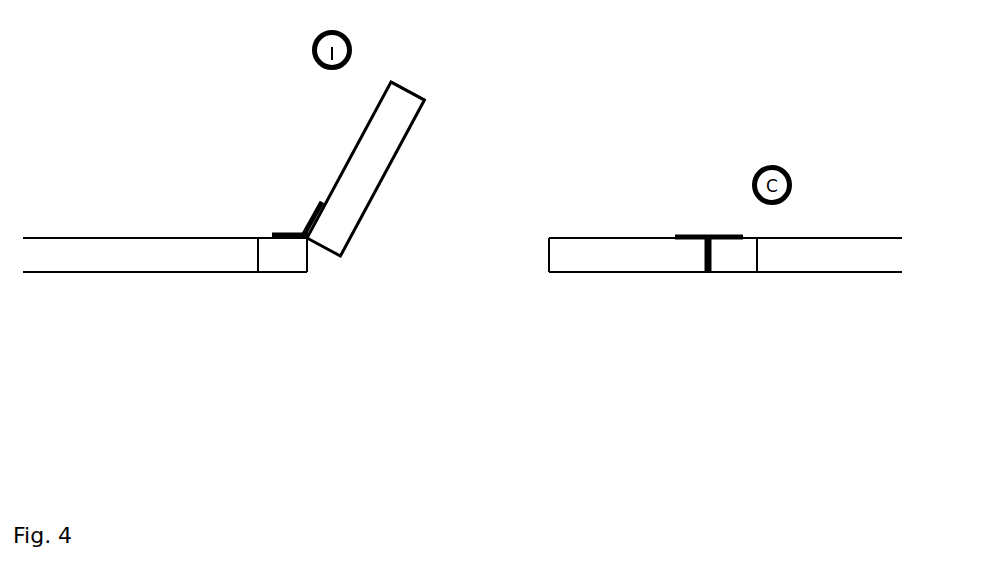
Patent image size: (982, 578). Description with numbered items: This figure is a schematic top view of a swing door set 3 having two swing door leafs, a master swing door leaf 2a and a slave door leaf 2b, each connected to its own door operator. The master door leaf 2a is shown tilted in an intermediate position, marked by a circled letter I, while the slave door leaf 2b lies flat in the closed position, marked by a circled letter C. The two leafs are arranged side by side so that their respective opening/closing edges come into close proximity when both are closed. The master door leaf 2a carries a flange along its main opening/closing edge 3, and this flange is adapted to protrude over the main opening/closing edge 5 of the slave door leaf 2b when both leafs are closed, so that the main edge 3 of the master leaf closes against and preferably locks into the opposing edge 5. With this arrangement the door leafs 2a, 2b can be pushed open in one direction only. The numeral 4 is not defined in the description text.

The master swing door leaf 2a is at (363, 182).
The slave door leaf 2b is at (598, 253).
The opening/closing edge 3 is at (507, 377).
The weld seam 4 is at (288, 248).
The main opening/closing edge of the slave door leaf 5 is at (547, 232).